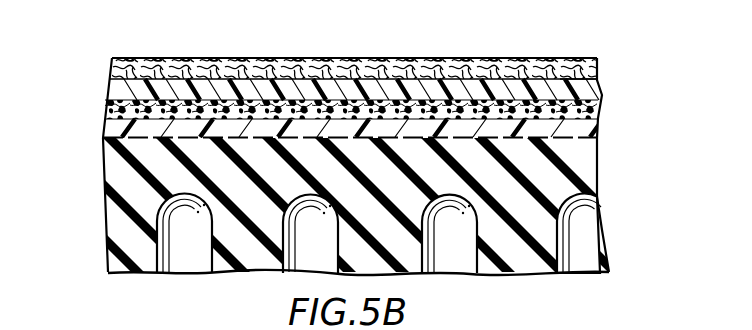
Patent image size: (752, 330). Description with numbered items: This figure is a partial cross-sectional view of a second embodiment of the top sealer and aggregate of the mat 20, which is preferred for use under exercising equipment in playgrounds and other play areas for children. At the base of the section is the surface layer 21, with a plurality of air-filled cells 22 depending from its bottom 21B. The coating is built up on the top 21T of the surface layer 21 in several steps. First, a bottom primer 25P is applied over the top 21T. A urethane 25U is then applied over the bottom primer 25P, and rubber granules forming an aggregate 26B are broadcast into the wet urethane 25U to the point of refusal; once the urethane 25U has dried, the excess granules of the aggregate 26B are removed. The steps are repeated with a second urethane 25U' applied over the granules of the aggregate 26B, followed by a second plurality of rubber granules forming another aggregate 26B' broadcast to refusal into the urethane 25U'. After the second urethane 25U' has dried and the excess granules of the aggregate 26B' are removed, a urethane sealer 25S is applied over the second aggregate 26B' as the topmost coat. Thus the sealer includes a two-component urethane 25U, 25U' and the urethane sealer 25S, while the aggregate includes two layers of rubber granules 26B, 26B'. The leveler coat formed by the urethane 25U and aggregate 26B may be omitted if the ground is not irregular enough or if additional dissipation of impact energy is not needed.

The mat 20 is at (340, 166).
The surface layer 21 is at (150, 165).
The top of the surface layer 21T is at (134, 140).
The bottom of the surface layer 21B is at (178, 214).
The air-filled cells 22 is at (189, 247).
The urethane sealer 25S is at (153, 59).
The bottom primer 25P is at (116, 136).
The urethane 25U is at (380, 136).
The second urethane 25U' is at (611, 104).
The aggregate 26B is at (323, 86).
The second aggregate 26B' is at (563, 41).